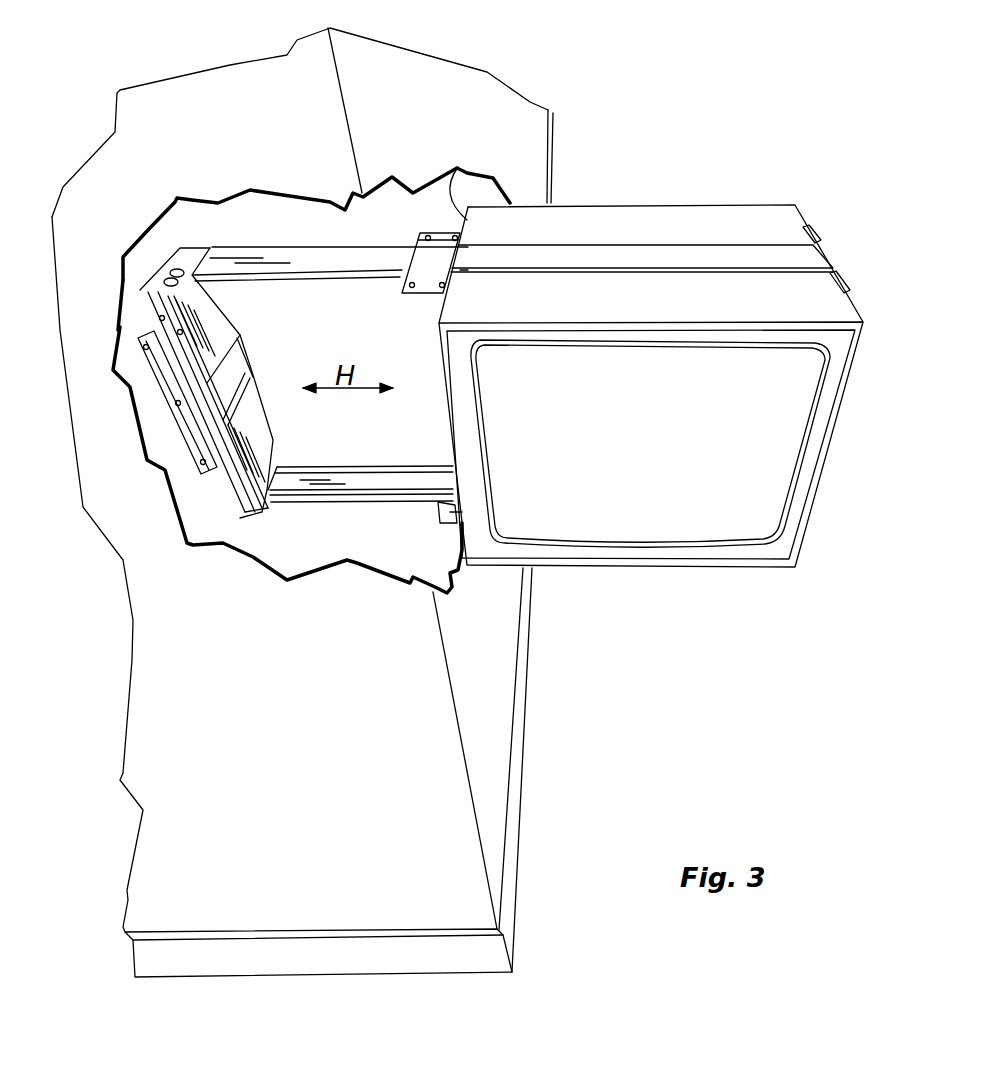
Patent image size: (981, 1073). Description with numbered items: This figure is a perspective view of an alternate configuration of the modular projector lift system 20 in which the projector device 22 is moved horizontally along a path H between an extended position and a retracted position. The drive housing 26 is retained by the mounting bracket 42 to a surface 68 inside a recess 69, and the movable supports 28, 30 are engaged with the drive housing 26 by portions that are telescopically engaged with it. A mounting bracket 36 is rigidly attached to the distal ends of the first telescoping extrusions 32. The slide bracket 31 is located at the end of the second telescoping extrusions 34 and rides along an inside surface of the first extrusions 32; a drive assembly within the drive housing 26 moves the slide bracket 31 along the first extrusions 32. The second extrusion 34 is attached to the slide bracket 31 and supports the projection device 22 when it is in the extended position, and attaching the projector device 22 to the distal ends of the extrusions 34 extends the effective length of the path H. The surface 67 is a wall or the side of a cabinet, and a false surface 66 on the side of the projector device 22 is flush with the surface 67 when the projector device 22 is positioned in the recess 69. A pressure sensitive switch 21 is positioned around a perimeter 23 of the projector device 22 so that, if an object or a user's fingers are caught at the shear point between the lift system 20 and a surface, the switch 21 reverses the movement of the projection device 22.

The modular projector lift system 20 is at (615, 142).
The pressure sensitive switch 21 is at (458, 167).
The perimeter 23 is at (479, 168).
The projector device 22 is at (642, 449).
The drive housing 26 is at (228, 362).
The movable support 28 is at (321, 240).
The movable support 30 is at (378, 503).
The slide bracket 31 is at (815, 236).
The first telescoping extrusions 32 is at (278, 262).
The second telescoping extrusions 34 is at (613, 257).
The mounting bracket 36 is at (428, 265).
The mounting bracket 42 is at (168, 378).
The false surface 66 is at (823, 473).
The surface 67 is at (495, 690).
The surface 68 is at (126, 312).
The recess 69 is at (377, 341).